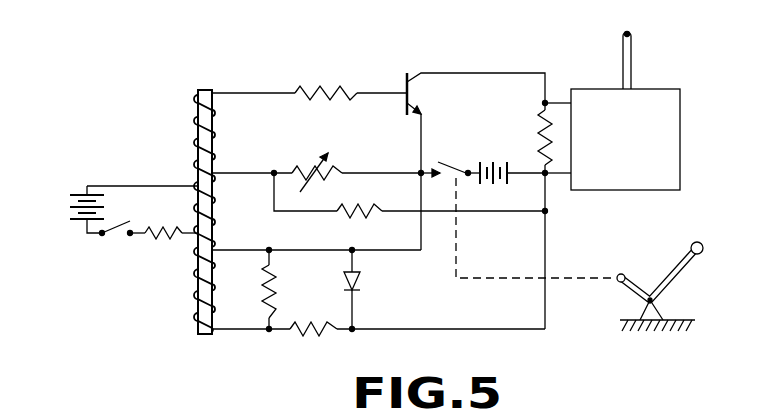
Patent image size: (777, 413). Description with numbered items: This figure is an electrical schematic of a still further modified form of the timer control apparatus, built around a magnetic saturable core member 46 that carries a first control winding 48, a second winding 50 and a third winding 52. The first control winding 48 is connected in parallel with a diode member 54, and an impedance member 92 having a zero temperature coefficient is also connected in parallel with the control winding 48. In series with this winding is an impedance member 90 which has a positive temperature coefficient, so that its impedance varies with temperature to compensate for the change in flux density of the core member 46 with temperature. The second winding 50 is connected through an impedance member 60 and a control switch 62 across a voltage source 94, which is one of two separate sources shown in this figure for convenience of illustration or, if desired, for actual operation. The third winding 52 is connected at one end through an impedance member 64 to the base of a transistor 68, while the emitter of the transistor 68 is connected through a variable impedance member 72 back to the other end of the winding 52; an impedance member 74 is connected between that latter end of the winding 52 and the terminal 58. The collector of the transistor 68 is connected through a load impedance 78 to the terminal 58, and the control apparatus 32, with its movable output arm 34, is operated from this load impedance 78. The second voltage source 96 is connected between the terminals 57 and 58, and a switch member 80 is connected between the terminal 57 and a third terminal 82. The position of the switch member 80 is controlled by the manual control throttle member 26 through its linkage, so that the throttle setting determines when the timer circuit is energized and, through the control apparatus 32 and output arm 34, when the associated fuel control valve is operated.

The manual control throttle member 26 is at (703, 248).
The control apparatus 32 is at (668, 155).
The movable output arm 34 is at (628, 60).
The magnetic saturable core member 46 is at (212, 89).
The first control winding 48 is at (193, 303).
The second winding 50 is at (214, 200).
The third winding 52 is at (193, 125).
The diode member 54 is at (362, 275).
The terminal 57 is at (470, 170).
The terminal 58 is at (544, 178).
The impedance member 60 is at (150, 245).
The control switch 62 is at (122, 224).
The impedance member 64 is at (315, 91).
The transistor 68 is at (414, 89).
The variable impedance member 72 is at (336, 166).
The impedance member 74 is at (366, 202).
The load impedance 78 is at (540, 128).
The switch member 80 is at (455, 162).
The third terminal 82 is at (438, 180).
The impedance member 90 is at (308, 320).
The impedance member 92 is at (280, 282).
The voltage source 94 is at (70, 225).
The voltage source 96 is at (503, 168).